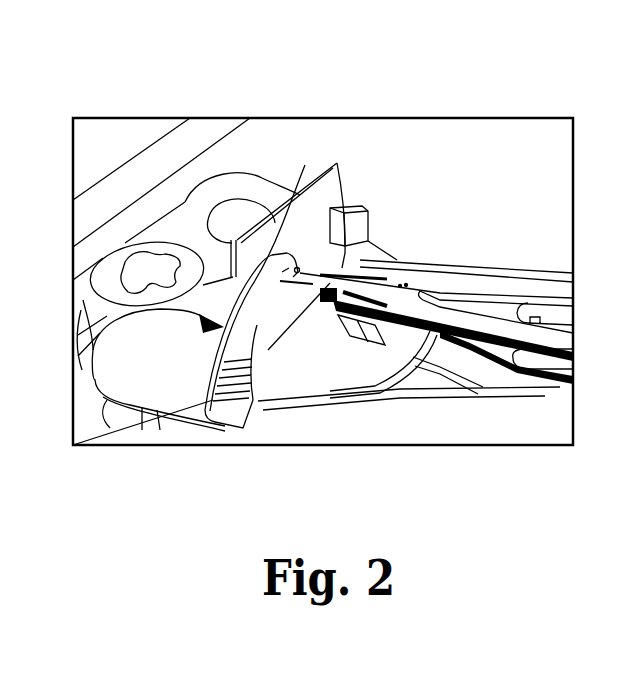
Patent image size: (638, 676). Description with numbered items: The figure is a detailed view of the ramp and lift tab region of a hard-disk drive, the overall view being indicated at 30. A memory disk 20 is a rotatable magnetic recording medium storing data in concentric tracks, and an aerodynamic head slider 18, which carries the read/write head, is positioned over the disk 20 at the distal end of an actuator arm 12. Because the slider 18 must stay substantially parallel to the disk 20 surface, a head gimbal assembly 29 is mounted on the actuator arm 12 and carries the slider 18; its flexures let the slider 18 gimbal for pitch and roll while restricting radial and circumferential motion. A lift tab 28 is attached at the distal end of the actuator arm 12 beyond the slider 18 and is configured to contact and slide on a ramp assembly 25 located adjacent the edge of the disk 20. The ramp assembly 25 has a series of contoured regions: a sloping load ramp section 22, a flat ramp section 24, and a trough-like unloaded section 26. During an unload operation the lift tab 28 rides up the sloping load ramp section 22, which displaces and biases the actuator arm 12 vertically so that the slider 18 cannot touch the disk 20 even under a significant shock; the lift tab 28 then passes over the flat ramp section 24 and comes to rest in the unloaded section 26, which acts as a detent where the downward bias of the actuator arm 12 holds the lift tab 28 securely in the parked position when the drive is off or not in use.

The bracket assembly 30 is at (243, 82).
The lift tab 28 is at (276, 248).
The head gimbal assembly 29 is at (340, 205).
The actuator arm 12 is at (490, 303).
The memory disk 20 is at (517, 423).
The ramp assembly 25 is at (80, 341).
The sloping load ramp section 22 is at (232, 403).
The flat ramp section 24 is at (262, 405).
The unloaded section 26 is at (282, 272).
The head slider 18 is at (372, 318).